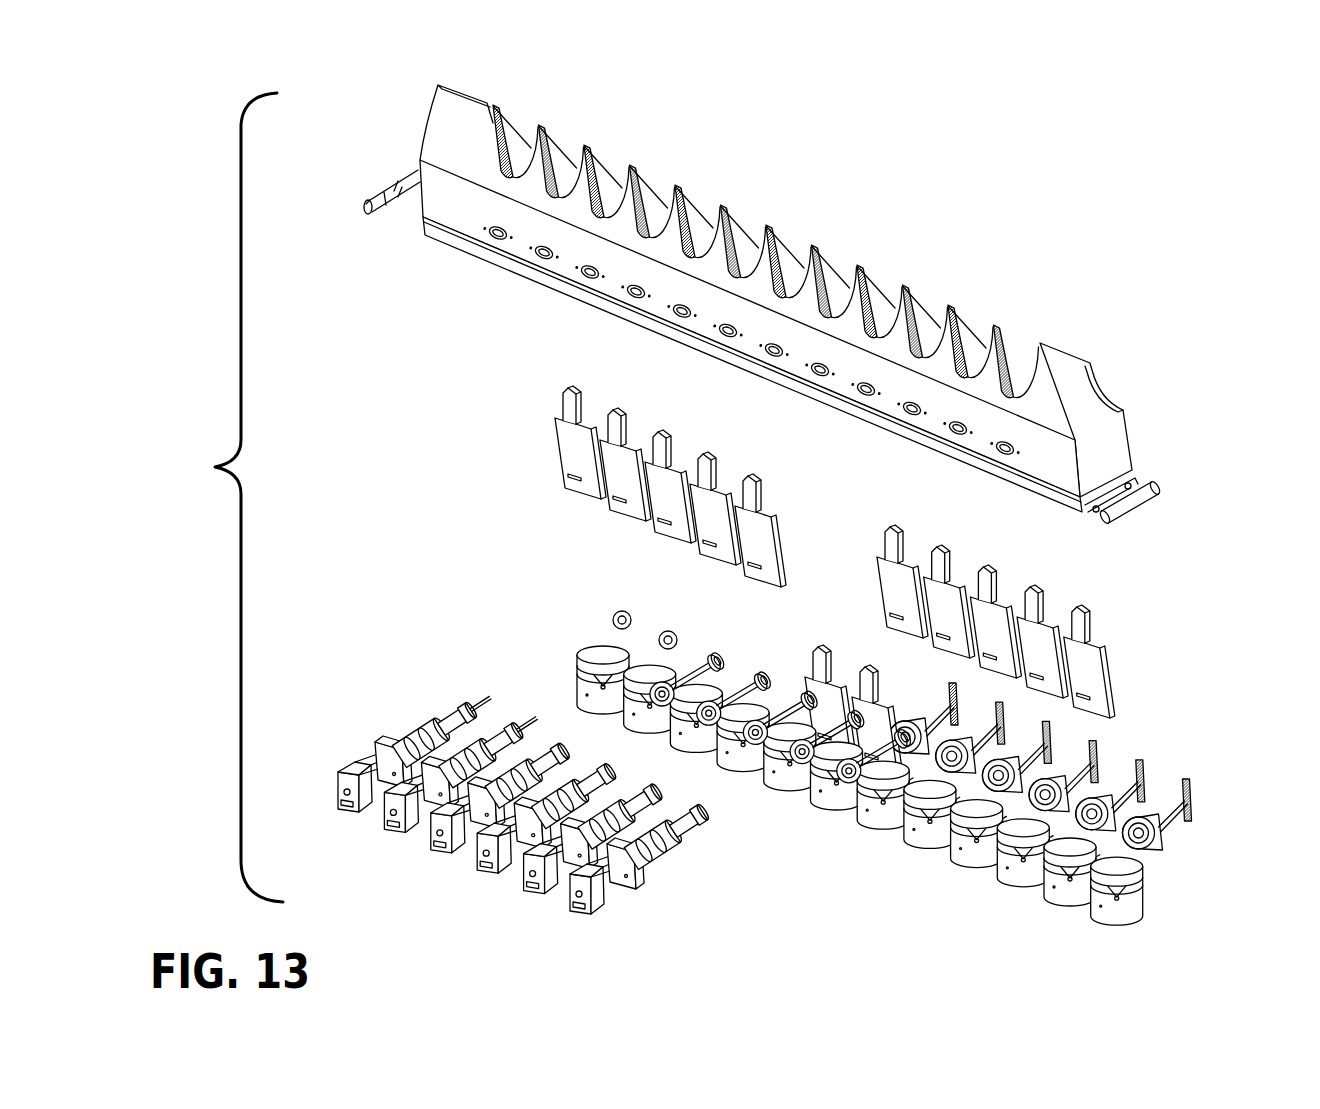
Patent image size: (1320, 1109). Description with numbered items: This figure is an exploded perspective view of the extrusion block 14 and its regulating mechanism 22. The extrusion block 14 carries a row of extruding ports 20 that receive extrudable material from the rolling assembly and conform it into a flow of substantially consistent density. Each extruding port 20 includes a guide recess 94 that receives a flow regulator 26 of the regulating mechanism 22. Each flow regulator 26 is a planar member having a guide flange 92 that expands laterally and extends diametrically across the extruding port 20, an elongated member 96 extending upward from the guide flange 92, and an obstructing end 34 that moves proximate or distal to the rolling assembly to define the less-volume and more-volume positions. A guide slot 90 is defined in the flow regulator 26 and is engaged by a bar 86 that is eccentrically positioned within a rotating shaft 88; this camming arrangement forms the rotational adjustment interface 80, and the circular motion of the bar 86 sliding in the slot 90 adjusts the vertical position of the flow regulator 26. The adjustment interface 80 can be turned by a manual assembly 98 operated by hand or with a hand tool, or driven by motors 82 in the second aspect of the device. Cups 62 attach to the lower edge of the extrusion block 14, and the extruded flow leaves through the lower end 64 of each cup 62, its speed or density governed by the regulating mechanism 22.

The extrusion block 14 is at (777, 295).
The extruding ports 20 is at (729, 231).
The regulating mechanism 22 is at (230, 497).
The flow regulator 26 is at (790, 506).
The obstructing end 34 is at (750, 478).
The cups 62 is at (1065, 898).
The lower end 64 is at (997, 887).
The adjustment interface 80 is at (761, 784).
The motors 82 is at (370, 752).
The bar 86 is at (767, 695).
The rotating shaft 88 is at (695, 663).
The guide slot 90 is at (577, 487).
The guide flange 92 is at (542, 445).
The guide recess 94 is at (497, 143).
The elongated member 96 is at (570, 408).
The manual assembly 98 is at (1147, 787).